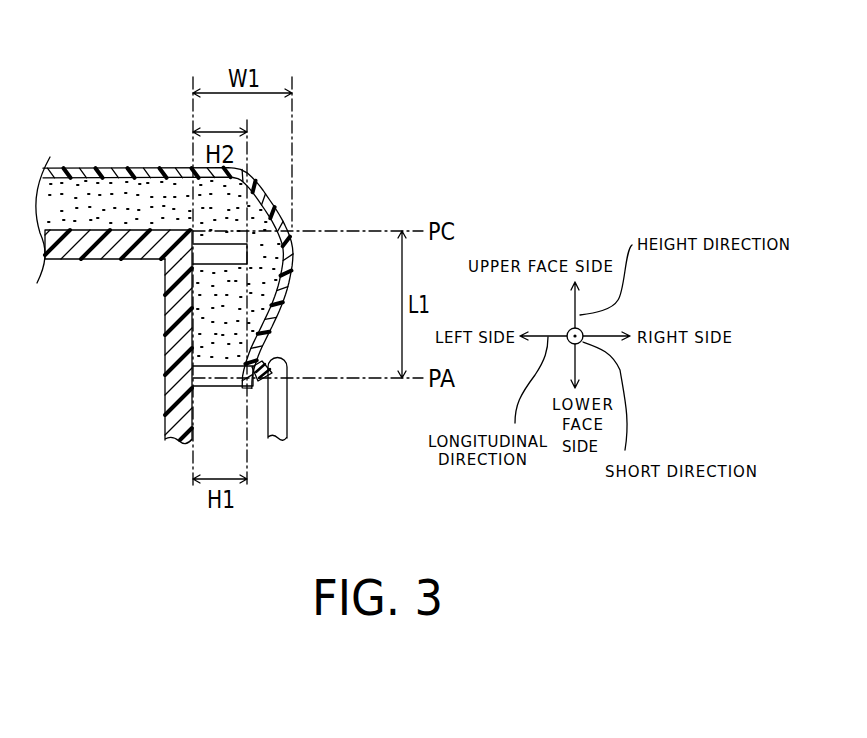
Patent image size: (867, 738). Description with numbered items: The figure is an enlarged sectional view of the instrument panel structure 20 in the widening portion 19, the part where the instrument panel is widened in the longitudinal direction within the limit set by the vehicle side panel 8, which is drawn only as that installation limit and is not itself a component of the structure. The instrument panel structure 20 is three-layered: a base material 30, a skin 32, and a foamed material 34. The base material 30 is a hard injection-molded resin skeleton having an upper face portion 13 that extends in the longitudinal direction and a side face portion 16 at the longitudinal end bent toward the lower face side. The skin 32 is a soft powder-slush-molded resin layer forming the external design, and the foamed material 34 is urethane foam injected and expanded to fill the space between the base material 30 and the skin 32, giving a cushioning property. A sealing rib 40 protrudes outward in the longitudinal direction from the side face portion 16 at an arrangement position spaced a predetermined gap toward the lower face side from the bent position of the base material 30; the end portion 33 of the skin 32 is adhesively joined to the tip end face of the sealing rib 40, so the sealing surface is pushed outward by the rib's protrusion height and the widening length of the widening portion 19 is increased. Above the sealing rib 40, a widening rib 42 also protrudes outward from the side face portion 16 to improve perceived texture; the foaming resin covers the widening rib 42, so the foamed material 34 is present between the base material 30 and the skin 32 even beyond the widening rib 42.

The side panel 8 is at (281, 415).
The upper face portion 13 is at (88, 261).
The side face portion 16 is at (132, 337).
The widening portion 19 is at (252, 55).
The instrument panel structure 20 is at (339, 200).
The base material 30 is at (103, 337).
The skin 32 is at (135, 168).
The end portion 33 is at (278, 356).
The foamed material 34 is at (97, 200).
The sealing rib 40 is at (225, 381).
The widening rib 42 is at (243, 257).